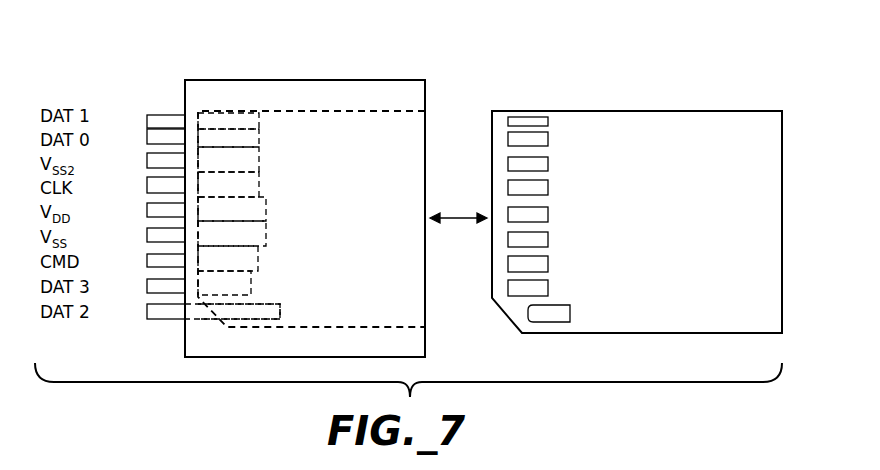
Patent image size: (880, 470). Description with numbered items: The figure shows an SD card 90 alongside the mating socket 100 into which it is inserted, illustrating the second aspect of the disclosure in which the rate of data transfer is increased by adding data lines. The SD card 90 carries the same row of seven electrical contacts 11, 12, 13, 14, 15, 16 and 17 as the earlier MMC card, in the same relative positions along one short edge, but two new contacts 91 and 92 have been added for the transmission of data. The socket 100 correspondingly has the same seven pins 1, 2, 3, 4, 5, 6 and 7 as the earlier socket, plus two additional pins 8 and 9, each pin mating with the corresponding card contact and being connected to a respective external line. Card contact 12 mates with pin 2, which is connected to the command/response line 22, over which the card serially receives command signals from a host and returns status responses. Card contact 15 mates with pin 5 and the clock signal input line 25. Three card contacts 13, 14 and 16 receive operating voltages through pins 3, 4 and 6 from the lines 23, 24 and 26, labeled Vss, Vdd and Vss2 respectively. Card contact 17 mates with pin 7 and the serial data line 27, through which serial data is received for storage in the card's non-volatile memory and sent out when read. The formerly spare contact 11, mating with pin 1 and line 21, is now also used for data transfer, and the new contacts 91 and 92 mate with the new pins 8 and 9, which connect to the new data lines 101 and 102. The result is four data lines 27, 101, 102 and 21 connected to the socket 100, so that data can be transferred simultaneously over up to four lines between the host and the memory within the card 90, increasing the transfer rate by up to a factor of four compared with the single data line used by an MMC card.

The mating socket 100 is at (225, 66).
The data line 101 is at (147, 116).
The serial data line 27 is at (147, 132).
The Vss2 line 26 is at (147, 156).
The clock signal input line 25 is at (147, 180).
The Vdd line 24 is at (147, 206).
The Vss line 23 is at (147, 231).
The command/response line 22 is at (147, 257).
The data line 21 is at (147, 282).
The data line 102 is at (147, 308).
The socket pin 1 is at (239, 283).
The socket pin 2 is at (239, 258).
The socket pin 3 is at (239, 233).
The socket pin 4 is at (239, 209).
The socket pin 5 is at (239, 184).
The socket pin 6 is at (239, 159).
The socket pin 7 is at (239, 139).
The additional socket pin 8 is at (239, 121).
The additional socket pin 9 is at (249, 311).
The SD card 90 is at (690, 101).
The new contact 92 is at (549, 121).
The card contact 17 is at (549, 139).
The card contact 16 is at (549, 164).
The card contact 15 is at (549, 187).
The card contact 14 is at (549, 214).
The card contact 13 is at (549, 239).
The card contact 12 is at (549, 264).
The card contact 11 is at (549, 288).
The new contact 91 is at (571, 313).